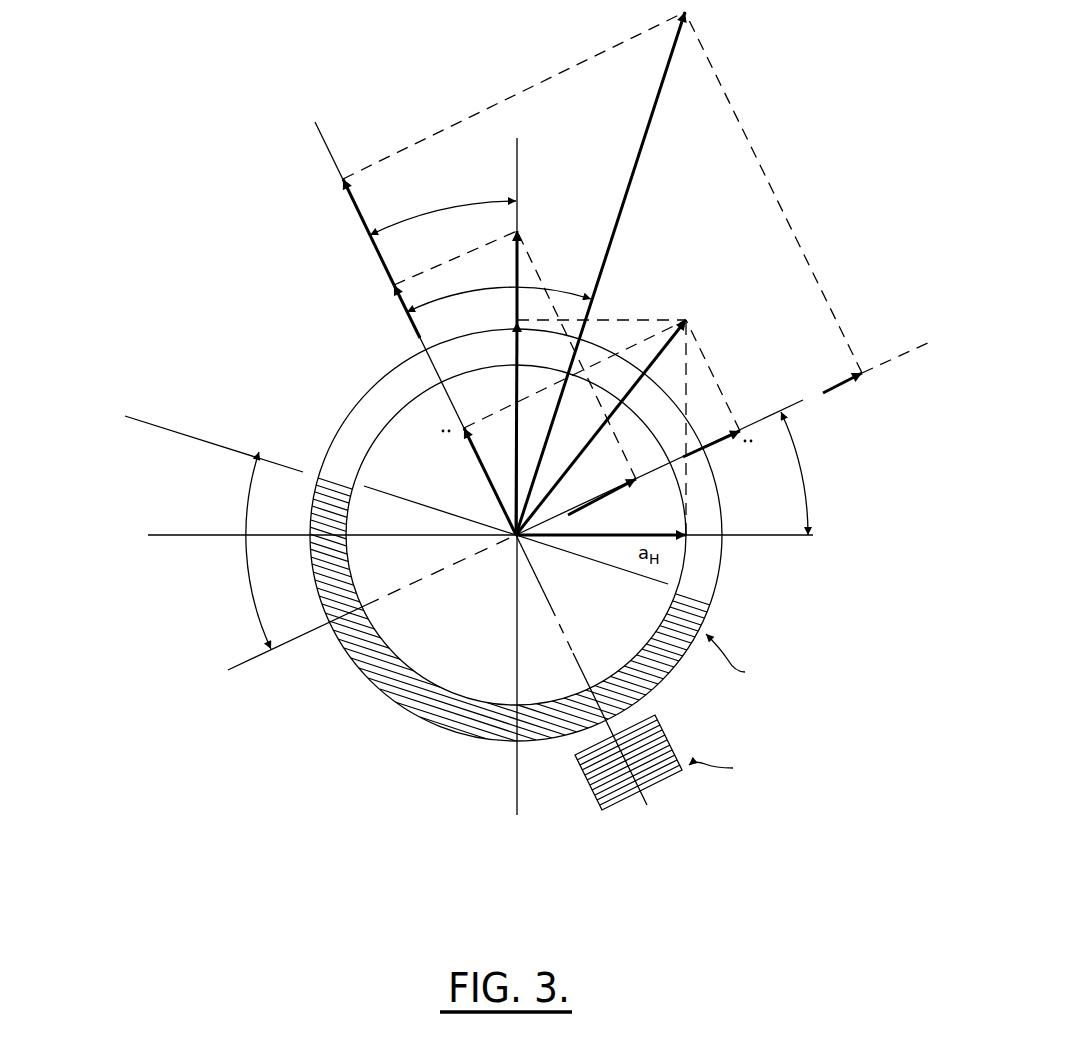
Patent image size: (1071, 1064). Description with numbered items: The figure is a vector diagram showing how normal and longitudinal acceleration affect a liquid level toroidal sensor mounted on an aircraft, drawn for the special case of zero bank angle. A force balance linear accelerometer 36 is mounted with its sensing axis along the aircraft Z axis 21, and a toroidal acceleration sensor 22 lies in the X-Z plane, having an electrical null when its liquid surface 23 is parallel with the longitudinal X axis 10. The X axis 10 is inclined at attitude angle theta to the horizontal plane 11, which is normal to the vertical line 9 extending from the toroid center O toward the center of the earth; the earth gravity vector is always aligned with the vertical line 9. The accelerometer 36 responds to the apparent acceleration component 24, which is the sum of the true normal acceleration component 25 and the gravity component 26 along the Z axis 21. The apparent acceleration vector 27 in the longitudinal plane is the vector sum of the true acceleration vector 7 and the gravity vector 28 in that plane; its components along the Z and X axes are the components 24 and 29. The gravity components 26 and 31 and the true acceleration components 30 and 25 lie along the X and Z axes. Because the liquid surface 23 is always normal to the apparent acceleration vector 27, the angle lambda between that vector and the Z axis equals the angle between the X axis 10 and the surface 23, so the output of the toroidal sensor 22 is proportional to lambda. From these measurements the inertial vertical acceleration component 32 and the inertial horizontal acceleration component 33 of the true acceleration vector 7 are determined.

The true acceleration vector 7 is at (655, 363).
The vertical line 9 is at (517, 782).
The X axis 10 is at (880, 363).
The horizontal plane 11 is at (765, 537).
The Z axis 21 is at (323, 130).
The toroidal acceleration sensor 22 is at (648, 693).
The liquid surface 23 is at (300, 465).
The apparent acceleration component a_Z 24 is at (358, 222).
The true normal acceleration component 25 is at (477, 472).
The gravity component g_Z 26 is at (407, 325).
The apparent acceleration vector 27 is at (657, 97).
The gravity vector g_XZ 28 is at (522, 237).
The apparent acceleration component a_X 29 is at (840, 395).
The true acceleration component x-double-dot 30 is at (713, 450).
The gravity component g_X 31 is at (610, 502).
The inertial vertical acceleration component a_V 32 is at (513, 353).
The inertial horizontal acceleration component a_H 33 is at (573, 553).
The force balance linear accelerometer 36 is at (602, 810).